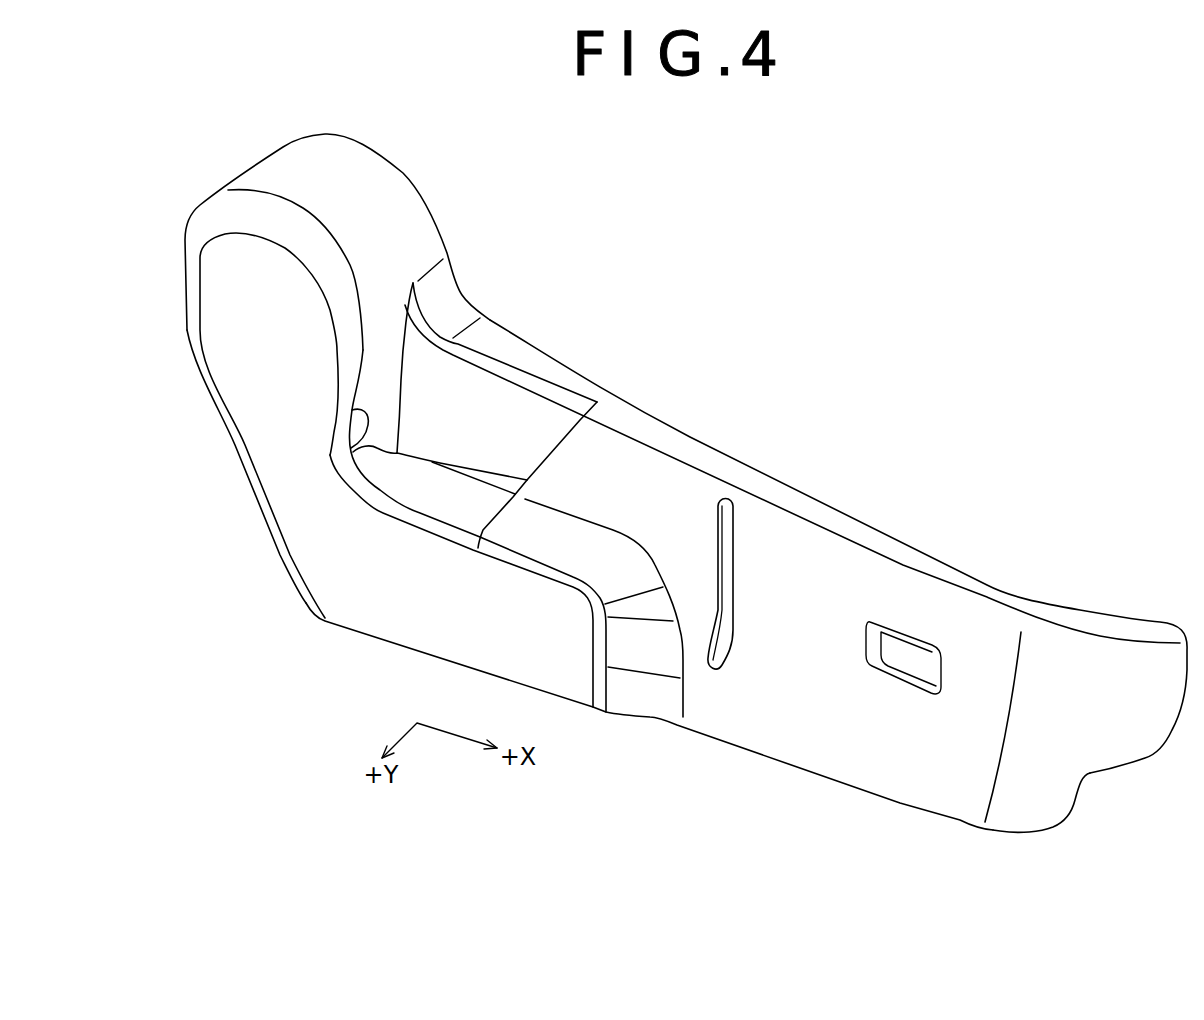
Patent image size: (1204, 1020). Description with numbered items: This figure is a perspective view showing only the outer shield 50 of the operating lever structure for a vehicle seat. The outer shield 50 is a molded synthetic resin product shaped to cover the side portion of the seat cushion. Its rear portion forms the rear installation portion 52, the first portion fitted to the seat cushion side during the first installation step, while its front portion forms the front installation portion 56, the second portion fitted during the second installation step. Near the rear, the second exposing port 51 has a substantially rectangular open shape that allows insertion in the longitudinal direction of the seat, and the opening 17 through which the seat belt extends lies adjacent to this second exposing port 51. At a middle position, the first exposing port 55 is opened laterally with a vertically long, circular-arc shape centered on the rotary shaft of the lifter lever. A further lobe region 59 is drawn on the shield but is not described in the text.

The opening 17 is at (476, 443).
The outer shield 50 is at (882, 478).
The second exposing port 51 is at (360, 425).
The rear installation portion 52 is at (363, 148).
The first exposing port 55 is at (713, 672).
The front installation portion 56 is at (1077, 800).
The opening 59 is at (246, 283).